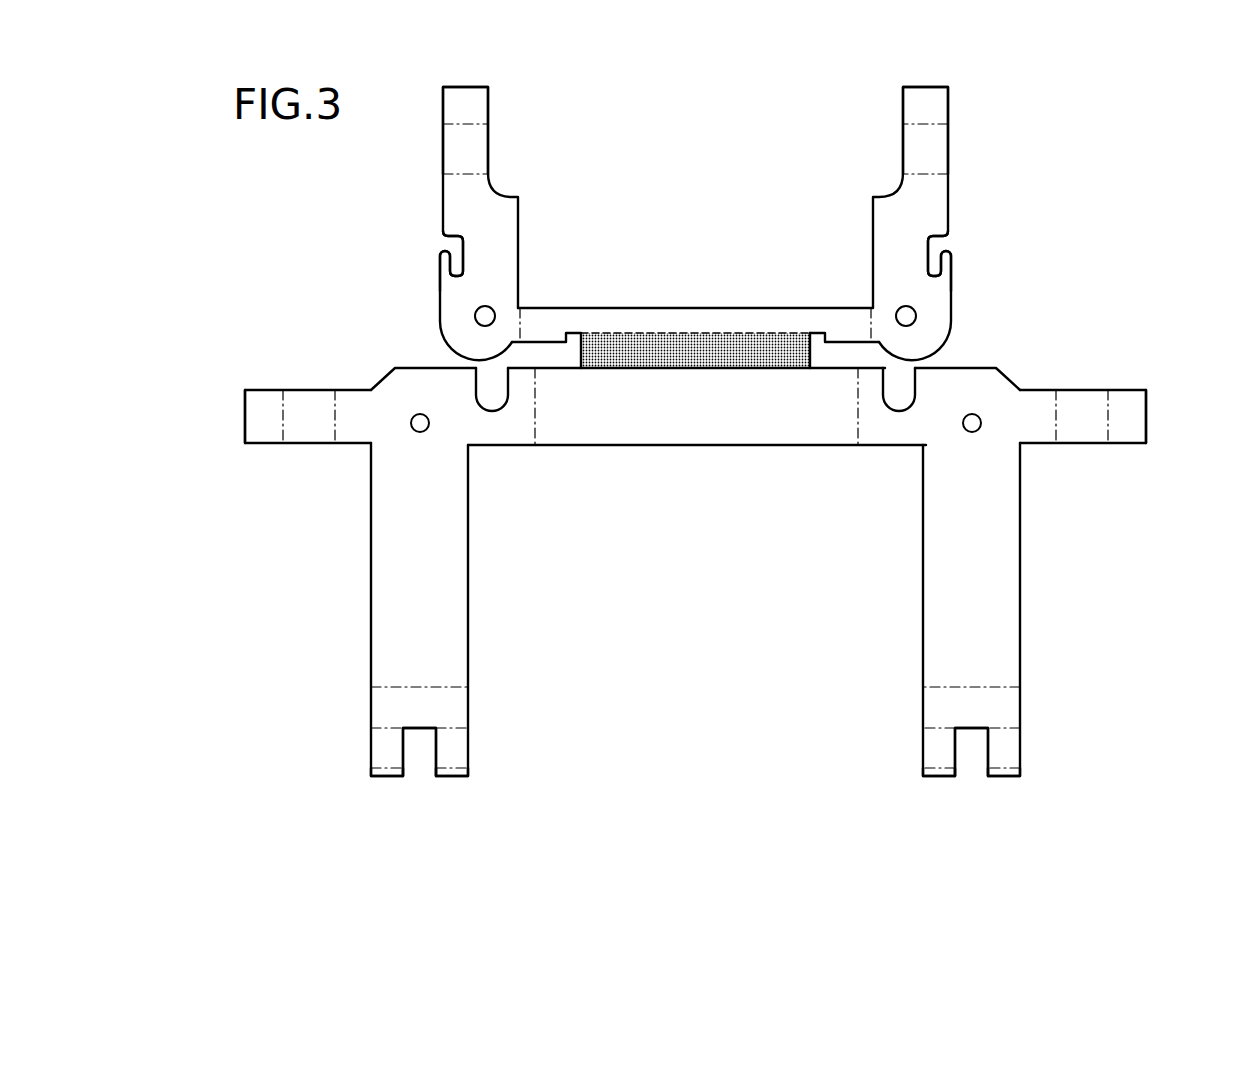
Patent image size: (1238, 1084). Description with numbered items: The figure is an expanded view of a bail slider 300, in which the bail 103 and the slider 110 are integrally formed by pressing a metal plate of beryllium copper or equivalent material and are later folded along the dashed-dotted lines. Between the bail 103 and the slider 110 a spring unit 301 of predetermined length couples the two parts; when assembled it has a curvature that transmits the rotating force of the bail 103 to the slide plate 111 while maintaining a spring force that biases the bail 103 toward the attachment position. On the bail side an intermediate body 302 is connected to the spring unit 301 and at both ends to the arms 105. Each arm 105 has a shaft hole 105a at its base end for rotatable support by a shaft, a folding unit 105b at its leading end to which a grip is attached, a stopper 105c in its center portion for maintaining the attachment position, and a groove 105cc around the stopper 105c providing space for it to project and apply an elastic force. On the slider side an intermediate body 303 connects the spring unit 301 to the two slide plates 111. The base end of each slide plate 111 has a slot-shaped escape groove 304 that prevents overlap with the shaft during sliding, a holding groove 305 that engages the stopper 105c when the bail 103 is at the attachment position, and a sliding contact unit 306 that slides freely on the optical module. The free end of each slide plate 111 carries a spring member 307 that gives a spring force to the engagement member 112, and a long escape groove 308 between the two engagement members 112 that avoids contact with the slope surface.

The bail slider 300 is at (221, 270).
The bail 103 is at (979, 89).
The arm 105 is at (472, 208).
The shaft hole 105a is at (487, 310).
The folding unit 105b is at (487, 137).
The stopper 105c is at (437, 260).
The groove 105cc is at (448, 242).
The spring unit 301 is at (655, 348).
The intermediate body 302 is at (693, 318).
The slider 110 is at (1172, 369).
The intermediate body 303 is at (680, 410).
The escape groove 304 is at (492, 412).
The holding groove 305 is at (415, 415).
The sliding contact unit 306 is at (305, 425).
The slide plate 111 is at (442, 605).
The spring member 307 is at (450, 710).
The escape groove 308 is at (422, 748).
The engagement member 112 is at (383, 776).